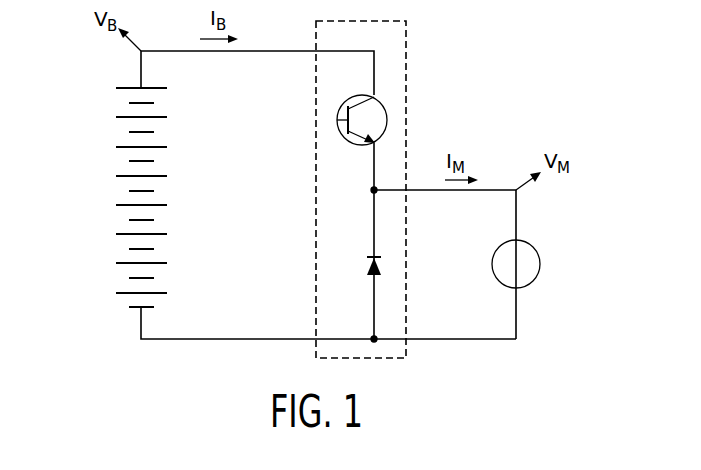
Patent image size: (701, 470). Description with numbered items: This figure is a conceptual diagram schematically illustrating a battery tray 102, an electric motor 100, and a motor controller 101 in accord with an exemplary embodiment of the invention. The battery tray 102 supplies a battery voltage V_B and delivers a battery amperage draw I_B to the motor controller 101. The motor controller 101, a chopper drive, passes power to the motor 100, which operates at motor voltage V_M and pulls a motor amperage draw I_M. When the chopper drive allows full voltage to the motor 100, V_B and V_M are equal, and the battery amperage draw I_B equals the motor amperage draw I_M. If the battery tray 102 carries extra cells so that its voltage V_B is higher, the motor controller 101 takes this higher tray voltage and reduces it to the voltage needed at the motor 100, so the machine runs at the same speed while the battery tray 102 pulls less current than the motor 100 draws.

The motor 100 is at (536, 293).
The motor controller 101 is at (406, 46).
The battery tray 102 is at (105, 186).